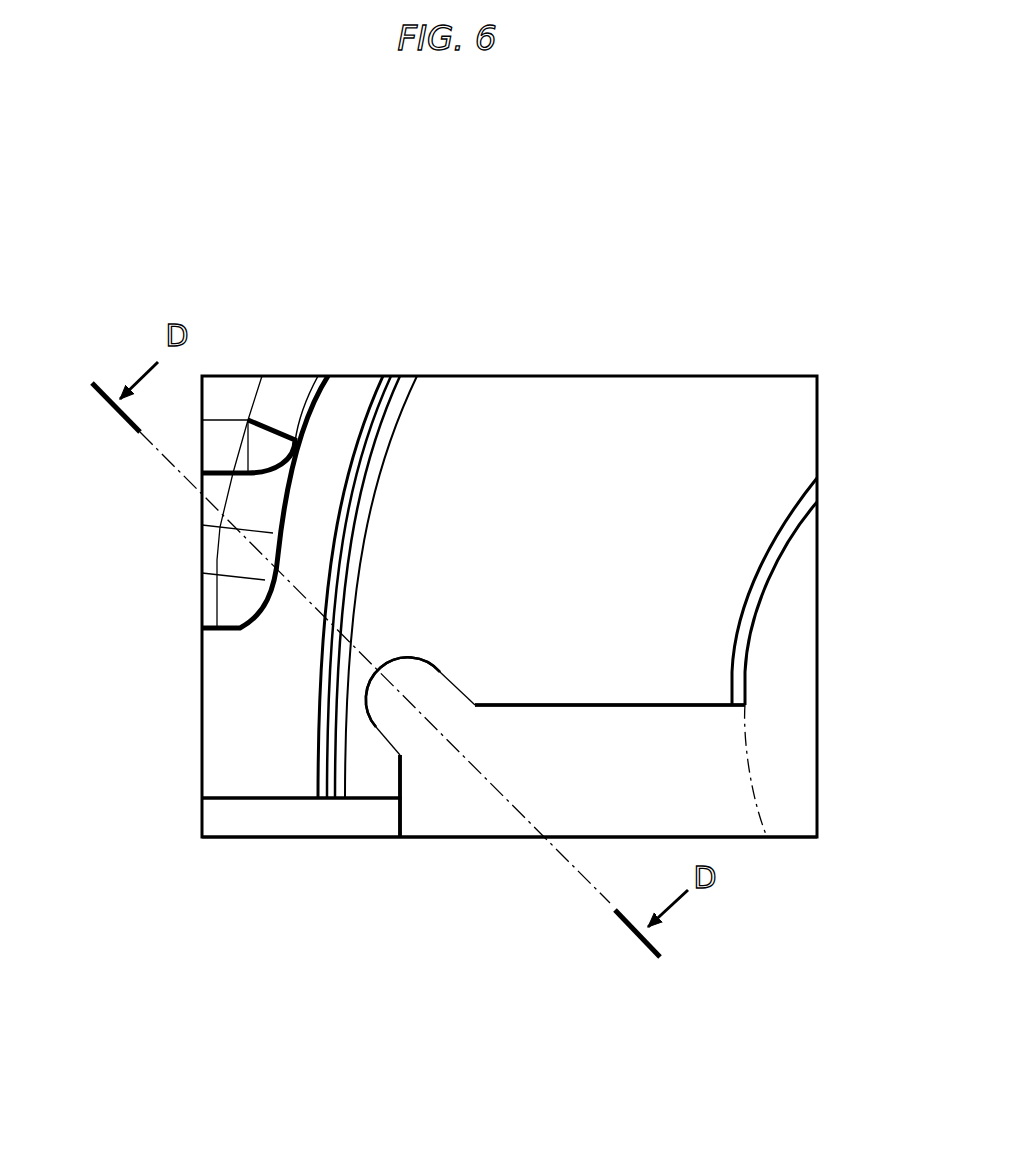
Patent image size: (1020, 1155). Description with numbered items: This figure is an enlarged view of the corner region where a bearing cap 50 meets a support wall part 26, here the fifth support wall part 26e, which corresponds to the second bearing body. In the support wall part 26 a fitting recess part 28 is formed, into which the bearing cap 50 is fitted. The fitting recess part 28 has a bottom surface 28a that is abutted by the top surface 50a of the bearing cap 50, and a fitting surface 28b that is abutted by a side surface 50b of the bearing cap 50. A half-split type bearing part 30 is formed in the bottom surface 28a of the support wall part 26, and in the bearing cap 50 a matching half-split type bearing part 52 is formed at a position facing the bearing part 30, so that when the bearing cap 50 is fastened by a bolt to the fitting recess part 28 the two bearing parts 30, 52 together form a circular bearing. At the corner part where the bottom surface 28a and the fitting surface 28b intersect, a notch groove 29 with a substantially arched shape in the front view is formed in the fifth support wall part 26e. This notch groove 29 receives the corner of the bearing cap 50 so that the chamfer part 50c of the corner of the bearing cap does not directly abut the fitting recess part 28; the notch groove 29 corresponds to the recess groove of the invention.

The support wall part 26 is at (509, 536).
The fifth support wall part 26e is at (653, 467).
The fitting recess part 28 is at (604, 742).
The bottom surface 28a is at (668, 709).
The fitting surface 28b is at (409, 775).
The notch groove 29 is at (413, 676).
The bearing part 30 is at (777, 588).
The bearing cap 50 is at (647, 792).
The top surface 50a is at (571, 703).
The side surface 50b is at (396, 818).
The chamfer part 50c is at (411, 729).
The bearing part 52 is at (748, 752).